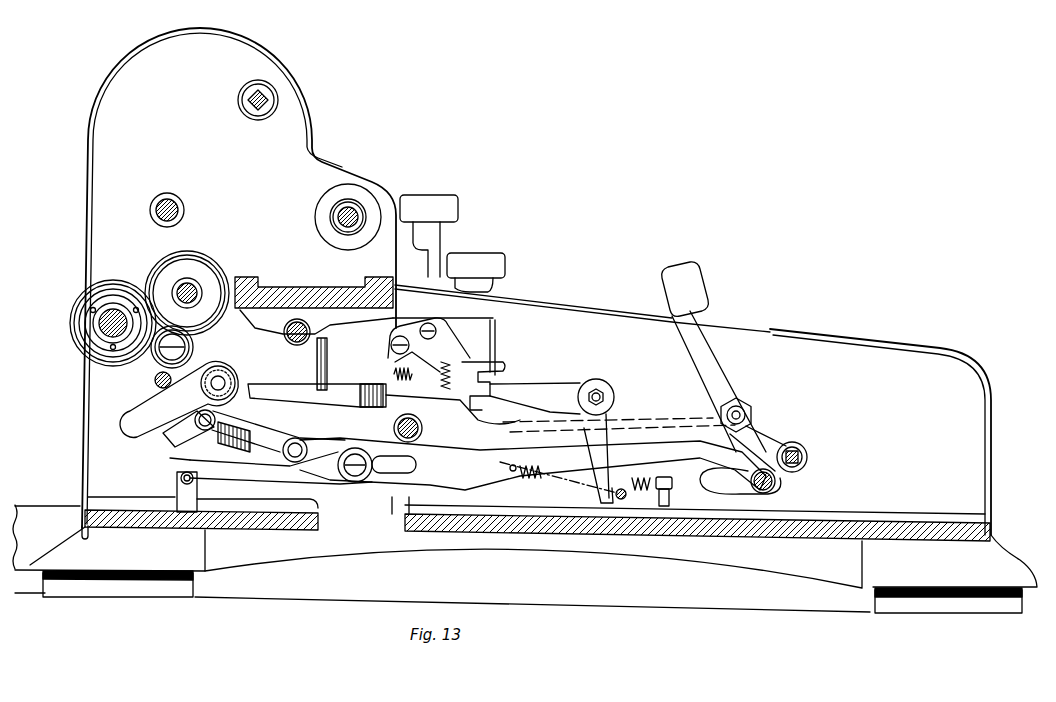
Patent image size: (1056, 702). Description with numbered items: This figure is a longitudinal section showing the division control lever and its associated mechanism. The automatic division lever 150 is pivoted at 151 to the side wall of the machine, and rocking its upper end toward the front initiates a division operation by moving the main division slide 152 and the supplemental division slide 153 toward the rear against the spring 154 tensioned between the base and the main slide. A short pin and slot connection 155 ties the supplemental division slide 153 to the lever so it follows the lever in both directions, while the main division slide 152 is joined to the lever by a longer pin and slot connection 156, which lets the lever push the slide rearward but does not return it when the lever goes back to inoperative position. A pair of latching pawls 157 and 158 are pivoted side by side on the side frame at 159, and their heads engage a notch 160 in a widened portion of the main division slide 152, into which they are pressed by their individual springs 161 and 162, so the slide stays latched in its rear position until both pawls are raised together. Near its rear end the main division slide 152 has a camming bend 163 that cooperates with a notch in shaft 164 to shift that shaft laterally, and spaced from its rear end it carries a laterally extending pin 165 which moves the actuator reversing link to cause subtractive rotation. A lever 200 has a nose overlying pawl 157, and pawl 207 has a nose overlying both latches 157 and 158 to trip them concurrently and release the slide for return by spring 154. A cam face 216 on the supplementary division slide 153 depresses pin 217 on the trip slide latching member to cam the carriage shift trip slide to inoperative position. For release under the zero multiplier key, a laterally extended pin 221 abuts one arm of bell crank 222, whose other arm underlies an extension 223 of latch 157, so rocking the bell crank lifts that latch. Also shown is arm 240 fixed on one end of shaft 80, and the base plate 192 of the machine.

The shaft 80 is at (218, 378).
The automatic division lever 150 is at (704, 288).
The pivot 151 is at (750, 413).
The main division slide 152 is at (533, 464).
The supplemental division slide 153 is at (310, 470).
The spring 154 is at (566, 476).
The short pin and slot connection 155 is at (810, 451).
The longer pin and slot connection 156 is at (770, 497).
The latching pawl 157 is at (258, 390).
The latching pawl 158 is at (291, 390).
The pivot 159 is at (393, 430).
The notch 160 is at (560, 420).
The spring 161 is at (390, 364).
The spring 162 is at (452, 366).
The camming bend 163 is at (167, 462).
The shaft 164 is at (180, 441).
The laterally extending pin 165 is at (298, 440).
The base plate 192 is at (398, 500).
The lever 200 is at (262, 380).
The pawl 207 is at (286, 380).
The cam face 216 is at (232, 488).
The pin 217 is at (180, 480).
The laterally extended pin 221 is at (656, 493).
The bell crank 222 is at (540, 394).
The extension 223 is at (514, 363).
The arm 240 is at (152, 402).